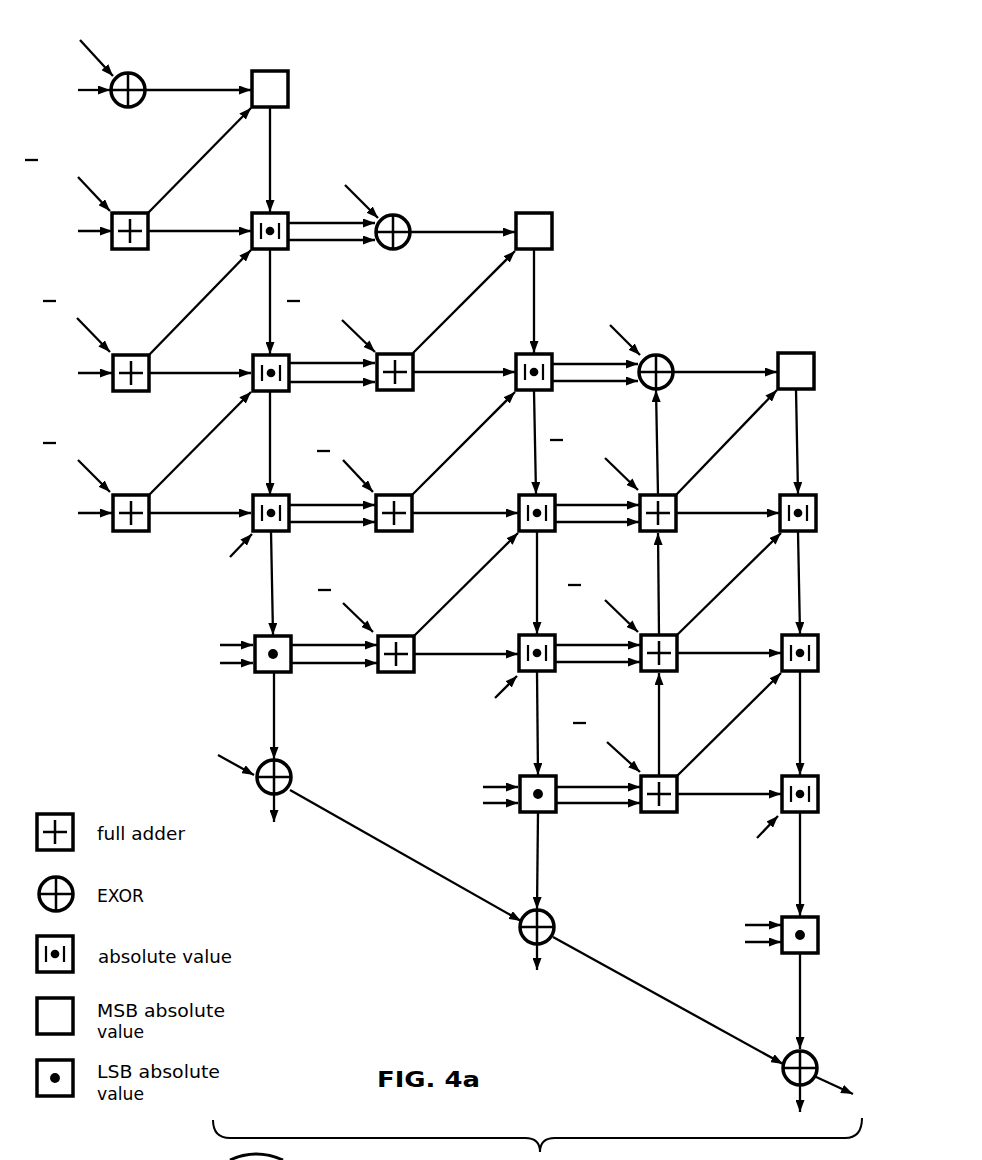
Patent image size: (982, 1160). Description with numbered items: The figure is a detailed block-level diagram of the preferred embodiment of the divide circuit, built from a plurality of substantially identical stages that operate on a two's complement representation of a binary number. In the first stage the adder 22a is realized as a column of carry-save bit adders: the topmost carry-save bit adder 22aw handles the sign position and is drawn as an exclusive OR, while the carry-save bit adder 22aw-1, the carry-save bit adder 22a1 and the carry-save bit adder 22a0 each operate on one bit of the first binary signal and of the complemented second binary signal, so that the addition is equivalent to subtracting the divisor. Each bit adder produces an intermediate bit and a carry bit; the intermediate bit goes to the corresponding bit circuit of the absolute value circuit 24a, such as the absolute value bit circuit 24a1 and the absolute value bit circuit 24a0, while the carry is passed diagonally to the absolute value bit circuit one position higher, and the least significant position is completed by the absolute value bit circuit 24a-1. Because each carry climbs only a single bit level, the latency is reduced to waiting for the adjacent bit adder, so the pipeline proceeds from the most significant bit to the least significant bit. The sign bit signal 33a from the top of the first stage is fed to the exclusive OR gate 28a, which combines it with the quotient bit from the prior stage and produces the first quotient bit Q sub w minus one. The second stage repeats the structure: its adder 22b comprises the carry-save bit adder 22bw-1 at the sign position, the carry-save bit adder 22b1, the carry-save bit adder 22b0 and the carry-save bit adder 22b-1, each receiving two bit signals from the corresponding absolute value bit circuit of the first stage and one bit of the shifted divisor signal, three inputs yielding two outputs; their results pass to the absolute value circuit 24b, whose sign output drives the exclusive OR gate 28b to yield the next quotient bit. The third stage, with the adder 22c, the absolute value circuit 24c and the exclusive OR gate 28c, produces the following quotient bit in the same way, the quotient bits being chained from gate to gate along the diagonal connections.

The adder 22a is at (128, 54).
The absolute value circuit 24a is at (270, 54).
The carry-save bit adder 22aw is at (140, 105).
The carry-save bit adder 22aw-1 is at (155, 268).
The carry-save bit adder 22a1 is at (150, 388).
The carry-save bit adder 22a0 is at (132, 535).
The absolute value bit circuit 24a1 is at (290, 390).
The absolute value bit circuit 24a0 is at (290, 537).
The absolute value bit circuit 24a-1 is at (257, 675).
The sign bit signal 33a is at (272, 167).
The adder 22b is at (393, 180).
The absolute value circuit 24b is at (534, 180).
The carry-save bit adder 22bw-1 is at (405, 249).
The carry-save bit adder 22b1 is at (395, 390).
The carry-save bit adder 22b0 is at (400, 535).
The carry-save bit adder 22b-1 is at (397, 675).
The adder 22c is at (656, 312).
The absolute value circuit 24c is at (796, 312).
The exclusive OR gate 28a is at (290, 770).
The exclusive OR gate 28b is at (555, 918).
The exclusive OR gate 28c is at (817, 1055).